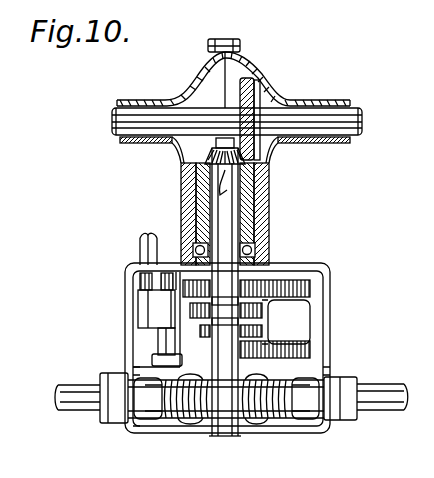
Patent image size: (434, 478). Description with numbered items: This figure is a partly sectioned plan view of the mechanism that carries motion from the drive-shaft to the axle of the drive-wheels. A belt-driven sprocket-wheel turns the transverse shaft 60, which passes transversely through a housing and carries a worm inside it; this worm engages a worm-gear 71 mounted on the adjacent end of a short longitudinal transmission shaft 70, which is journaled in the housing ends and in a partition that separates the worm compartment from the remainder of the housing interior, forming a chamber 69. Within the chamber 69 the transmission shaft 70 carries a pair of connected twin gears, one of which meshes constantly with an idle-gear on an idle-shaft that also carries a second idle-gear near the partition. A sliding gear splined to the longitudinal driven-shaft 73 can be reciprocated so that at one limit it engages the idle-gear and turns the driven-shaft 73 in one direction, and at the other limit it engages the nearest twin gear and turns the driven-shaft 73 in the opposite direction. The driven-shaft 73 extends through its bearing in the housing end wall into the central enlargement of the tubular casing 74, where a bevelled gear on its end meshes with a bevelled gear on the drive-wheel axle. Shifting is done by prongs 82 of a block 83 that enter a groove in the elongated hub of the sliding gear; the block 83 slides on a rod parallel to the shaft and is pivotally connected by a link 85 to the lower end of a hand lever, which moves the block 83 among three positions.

The transverse shaft 60 is at (70, 393).
The chamber 69 is at (301, 319).
The longitudinal transmission shaft 70 is at (220, 422).
The worm-gear 71 is at (226, 402).
The driven-shaft 73 is at (270, 200).
The tubular casing 74 is at (237, 75).
The prongs 82 is at (173, 315).
The block 83 is at (157, 318).
The link 85 is at (146, 237).